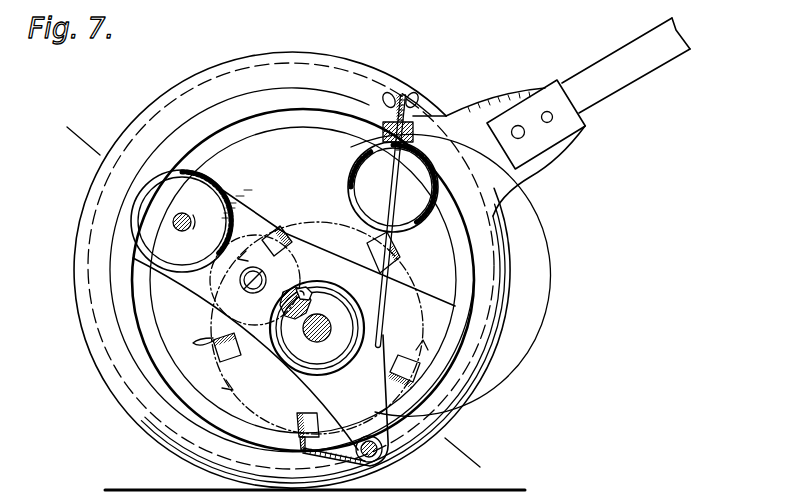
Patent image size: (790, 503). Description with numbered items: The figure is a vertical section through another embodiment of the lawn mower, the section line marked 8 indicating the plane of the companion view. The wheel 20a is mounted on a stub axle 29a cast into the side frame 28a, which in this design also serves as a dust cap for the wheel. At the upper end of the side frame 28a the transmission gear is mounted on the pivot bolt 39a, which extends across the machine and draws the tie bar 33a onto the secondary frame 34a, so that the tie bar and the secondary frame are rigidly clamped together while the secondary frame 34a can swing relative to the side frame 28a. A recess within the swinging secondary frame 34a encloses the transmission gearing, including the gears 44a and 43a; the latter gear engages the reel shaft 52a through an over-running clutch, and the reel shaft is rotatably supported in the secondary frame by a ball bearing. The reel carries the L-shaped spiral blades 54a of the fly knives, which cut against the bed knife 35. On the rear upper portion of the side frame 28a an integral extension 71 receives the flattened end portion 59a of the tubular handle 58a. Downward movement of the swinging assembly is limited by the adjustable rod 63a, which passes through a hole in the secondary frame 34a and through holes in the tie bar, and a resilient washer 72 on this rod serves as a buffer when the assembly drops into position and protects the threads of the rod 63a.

The wheel 20a is at (195, 76).
The side frame 28a is at (478, 297).
The stub axle 29a is at (352, 180).
The tie bar 33a is at (223, 190).
The secondary frame 34a is at (297, 385).
The bed knife 35 is at (552, 121).
The pivot bolt 39a is at (182, 221).
The transmission gear 43a is at (318, 284).
The transmission gear 44a is at (307, 287).
The reel shaft 52a is at (323, 333).
The blade 54a is at (287, 232).
The tubular handle 58a is at (627, 79).
The flattened end portion 59a is at (523, 108).
The adjustable rod 63a is at (384, 243).
The integral extension 71 is at (526, 171).
The washer 72 is at (410, 137).
The section line 8 is at (79, 137).